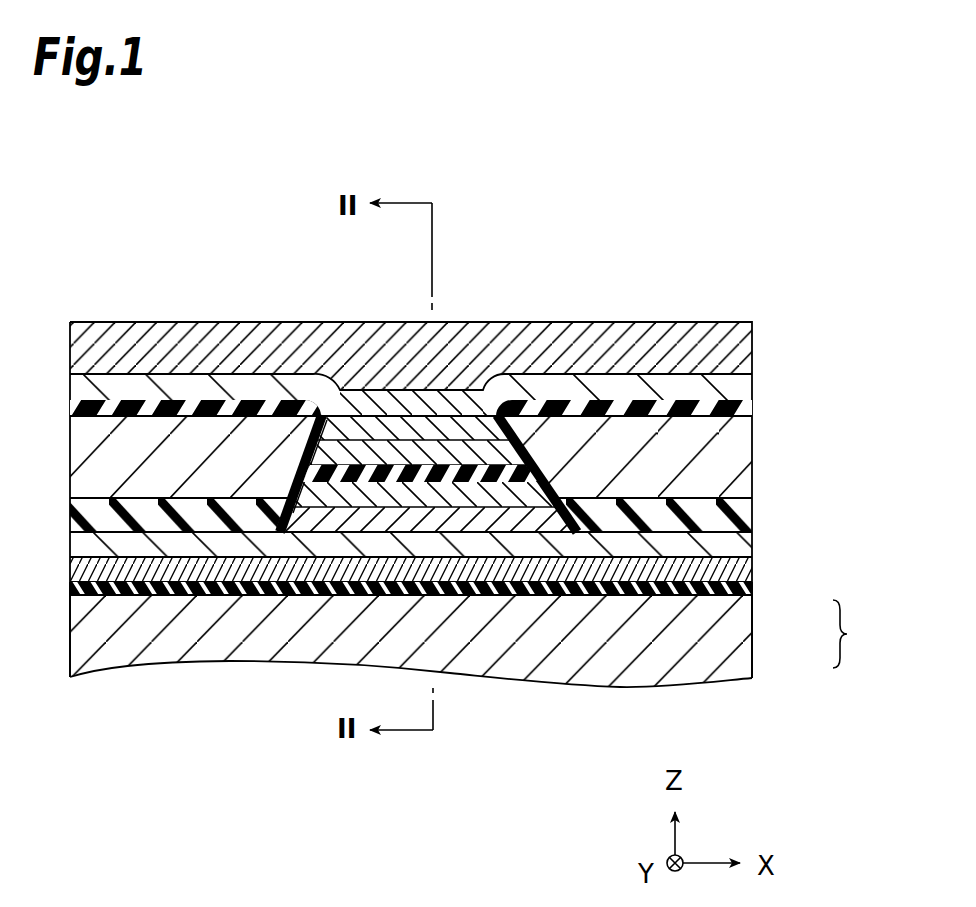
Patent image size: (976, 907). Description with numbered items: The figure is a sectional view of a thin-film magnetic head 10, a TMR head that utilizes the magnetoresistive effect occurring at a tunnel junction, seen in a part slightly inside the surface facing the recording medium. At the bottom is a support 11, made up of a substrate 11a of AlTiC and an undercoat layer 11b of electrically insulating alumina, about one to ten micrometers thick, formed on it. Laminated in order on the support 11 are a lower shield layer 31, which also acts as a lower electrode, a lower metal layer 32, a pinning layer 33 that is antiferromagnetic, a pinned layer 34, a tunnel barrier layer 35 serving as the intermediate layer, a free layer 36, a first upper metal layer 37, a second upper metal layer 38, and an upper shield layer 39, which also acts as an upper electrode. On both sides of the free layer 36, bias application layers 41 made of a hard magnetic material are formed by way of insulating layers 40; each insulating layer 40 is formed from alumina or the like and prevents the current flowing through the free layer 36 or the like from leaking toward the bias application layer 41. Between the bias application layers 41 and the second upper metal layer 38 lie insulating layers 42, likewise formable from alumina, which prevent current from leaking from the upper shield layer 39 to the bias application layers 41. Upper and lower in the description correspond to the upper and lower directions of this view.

The thin-film magnetic head 10 is at (706, 241).
The support 11 is at (479, 630).
The substrate 11a is at (750, 648).
The undercoat layer 11b is at (750, 588).
The lower shield layer 31 is at (752, 572).
The lower metal layer 32 is at (752, 542).
The pinning layer 33 is at (530, 527).
The pinned layer 34 is at (450, 492).
The tunnel barrier layer 35 is at (422, 470).
The free layer 36 is at (384, 447).
The first upper metal layer 37 is at (342, 416).
The second upper metal layer 38 is at (513, 385).
The upper shield layer 39 is at (225, 335).
The insulating layer 40 is at (72, 510).
The bias application layer 41 is at (72, 455).
The insulating layer 42 is at (72, 407).